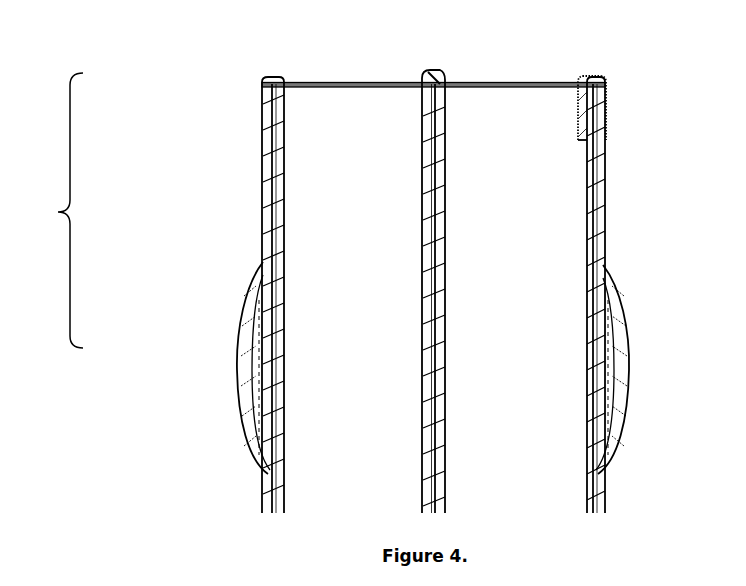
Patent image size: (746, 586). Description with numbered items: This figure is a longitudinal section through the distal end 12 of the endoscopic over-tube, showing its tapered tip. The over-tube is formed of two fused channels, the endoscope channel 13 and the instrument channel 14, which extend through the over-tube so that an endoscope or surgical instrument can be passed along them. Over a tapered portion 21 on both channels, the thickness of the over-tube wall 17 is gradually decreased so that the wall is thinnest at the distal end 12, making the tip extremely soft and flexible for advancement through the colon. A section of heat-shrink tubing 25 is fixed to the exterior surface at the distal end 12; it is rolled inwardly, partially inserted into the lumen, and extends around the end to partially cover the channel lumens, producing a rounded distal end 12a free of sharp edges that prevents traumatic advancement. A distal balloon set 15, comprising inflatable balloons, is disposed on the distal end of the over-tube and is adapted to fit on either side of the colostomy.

The distal end 12 is at (483, 72).
The rounded distal end 12a is at (432, 70).
The endoscope channel 13 is at (337, 112).
The instrument channel 14 is at (515, 132).
The distal balloon set 15 is at (612, 353).
The over-tube wall 17 is at (606, 141).
The tapered portion 21 is at (50, 210).
The heat-shrink tubing 25 is at (262, 167).